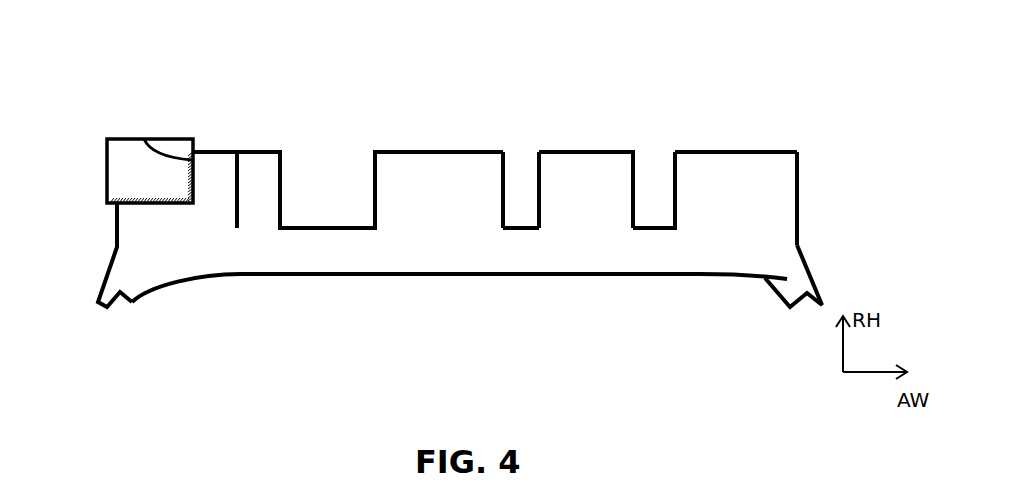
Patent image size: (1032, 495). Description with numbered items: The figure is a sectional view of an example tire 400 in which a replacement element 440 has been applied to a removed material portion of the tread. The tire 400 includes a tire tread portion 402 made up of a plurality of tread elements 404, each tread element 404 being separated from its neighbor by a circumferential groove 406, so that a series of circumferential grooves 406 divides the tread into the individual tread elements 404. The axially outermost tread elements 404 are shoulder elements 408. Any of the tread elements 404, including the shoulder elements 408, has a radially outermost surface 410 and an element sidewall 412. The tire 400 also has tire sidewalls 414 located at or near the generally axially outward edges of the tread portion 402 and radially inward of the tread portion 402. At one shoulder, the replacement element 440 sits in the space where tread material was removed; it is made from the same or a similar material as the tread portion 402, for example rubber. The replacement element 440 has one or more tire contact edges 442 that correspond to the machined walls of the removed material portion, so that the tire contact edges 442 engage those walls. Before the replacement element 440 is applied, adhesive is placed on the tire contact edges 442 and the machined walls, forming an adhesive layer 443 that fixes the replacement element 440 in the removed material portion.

The tire 400 is at (789, 94).
The tire tread portion 402 is at (815, 186).
The tread element 404 is at (562, 162).
The circumferential groove 406 is at (652, 212).
The shoulder element 408 is at (732, 162).
The radially outermost surface 410 is at (223, 150).
The element sidewall 412 is at (115, 218).
The tire sidewall 414 is at (775, 281).
The replacement element 440 is at (120, 176).
The tire contact edge 442 is at (163, 202).
The adhesive layer 443 is at (135, 203).